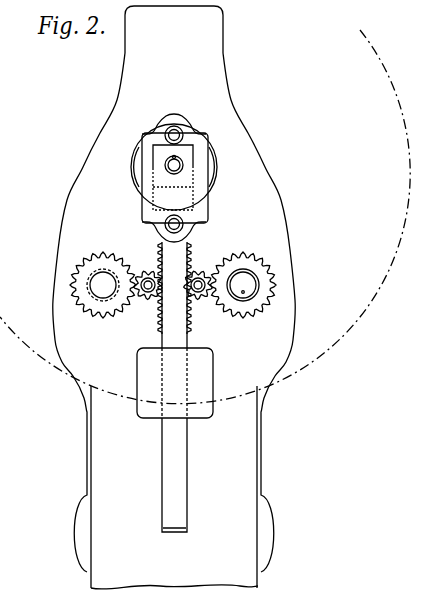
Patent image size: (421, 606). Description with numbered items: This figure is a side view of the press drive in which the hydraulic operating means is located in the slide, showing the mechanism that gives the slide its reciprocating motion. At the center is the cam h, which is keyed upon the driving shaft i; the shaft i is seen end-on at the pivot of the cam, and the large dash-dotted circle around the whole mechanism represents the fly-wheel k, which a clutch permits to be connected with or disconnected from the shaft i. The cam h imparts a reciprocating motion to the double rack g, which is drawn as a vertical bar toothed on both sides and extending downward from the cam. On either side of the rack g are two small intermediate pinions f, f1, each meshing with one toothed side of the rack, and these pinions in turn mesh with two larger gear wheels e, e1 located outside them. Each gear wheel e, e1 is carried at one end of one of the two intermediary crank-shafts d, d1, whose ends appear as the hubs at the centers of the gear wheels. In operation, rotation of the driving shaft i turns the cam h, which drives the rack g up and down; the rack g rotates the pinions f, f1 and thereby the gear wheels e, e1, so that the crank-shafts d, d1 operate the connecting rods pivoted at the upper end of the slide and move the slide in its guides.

The intermediary crank-shaft d is at (103, 290).
The intermediary crank-shaft d1 is at (243, 290).
The gear wheel e is at (103, 270).
The gear wheel e1 is at (243, 268).
The intermediate pinion f is at (146, 270).
The intermediate pinion f1 is at (199, 270).
The double rack g is at (188, 316).
The cam h is at (133, 182).
The driving shaft i is at (183, 164).
The fly-wheel k is at (404, 165).